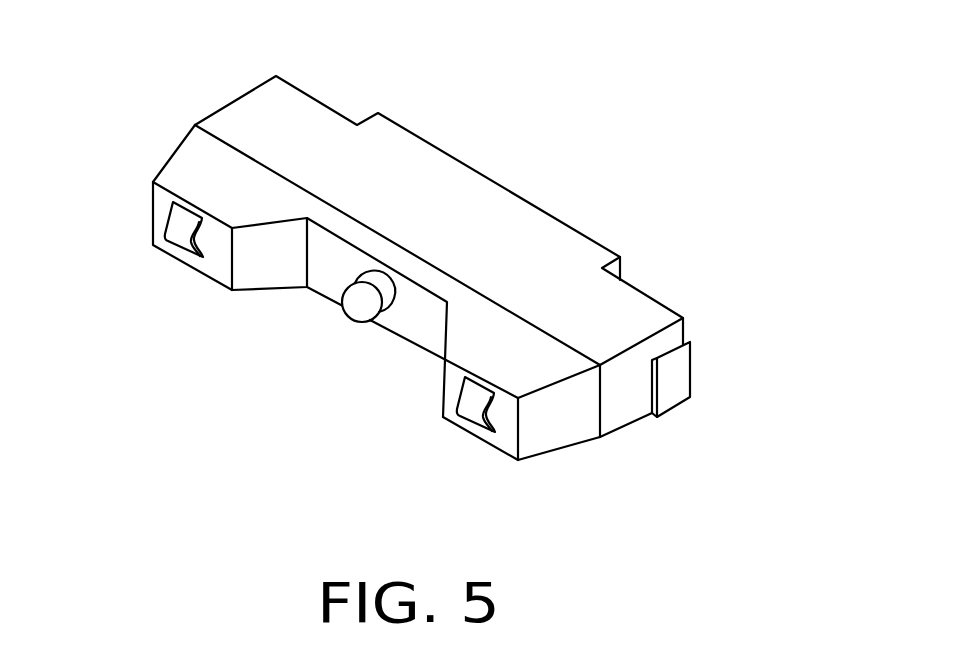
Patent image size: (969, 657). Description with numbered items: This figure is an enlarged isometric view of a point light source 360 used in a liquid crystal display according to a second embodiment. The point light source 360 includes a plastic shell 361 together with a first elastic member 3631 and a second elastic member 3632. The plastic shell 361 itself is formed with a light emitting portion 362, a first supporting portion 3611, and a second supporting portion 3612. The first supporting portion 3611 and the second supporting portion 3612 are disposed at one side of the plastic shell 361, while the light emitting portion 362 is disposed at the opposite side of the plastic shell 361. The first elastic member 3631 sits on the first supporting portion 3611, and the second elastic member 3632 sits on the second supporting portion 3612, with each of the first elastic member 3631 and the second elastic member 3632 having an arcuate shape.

The point light source 360 is at (403, 41).
The plastic shell 361 is at (613, 313).
The light emitting portion 362 is at (473, 171).
The first supporting portion 3611 is at (220, 267).
The second supporting portion 3612 is at (510, 437).
The first elastic member 3631 is at (172, 219).
The second elastic member 3632 is at (467, 397).